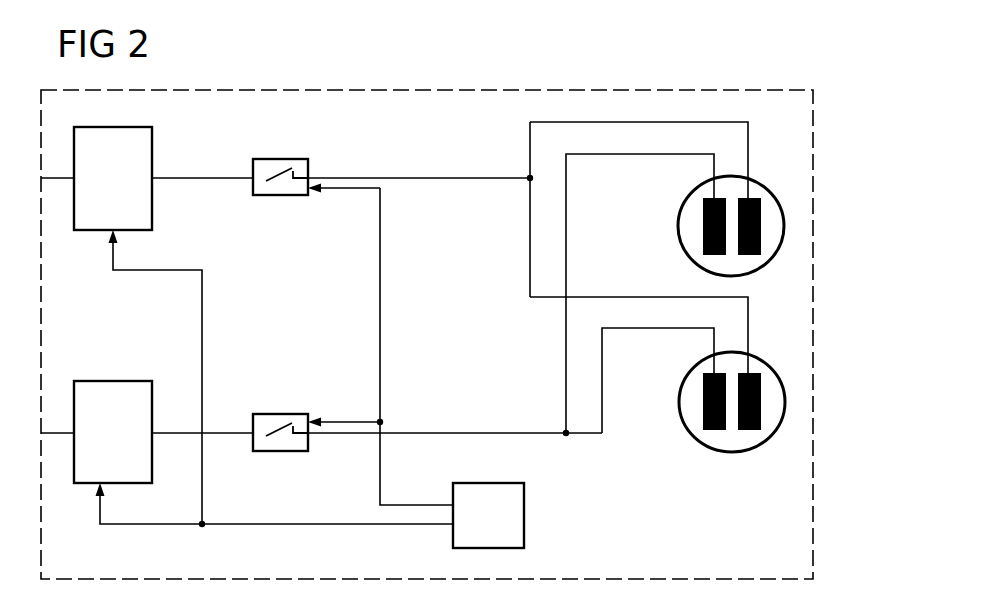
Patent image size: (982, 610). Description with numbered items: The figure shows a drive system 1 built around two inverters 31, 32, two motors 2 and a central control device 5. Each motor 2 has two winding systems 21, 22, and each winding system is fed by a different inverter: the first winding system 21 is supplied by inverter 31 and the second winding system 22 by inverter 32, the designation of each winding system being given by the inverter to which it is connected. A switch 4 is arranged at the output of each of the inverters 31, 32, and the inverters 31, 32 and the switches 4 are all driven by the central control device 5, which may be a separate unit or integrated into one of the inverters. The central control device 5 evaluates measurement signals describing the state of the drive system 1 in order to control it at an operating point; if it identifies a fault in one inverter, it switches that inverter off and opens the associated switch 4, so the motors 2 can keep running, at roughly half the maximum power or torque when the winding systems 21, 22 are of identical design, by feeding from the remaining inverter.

The drive system 1 is at (465, 90).
The motor 2 is at (734, 299).
The first winding system 21 is at (761, 227).
The second winding system 22 is at (703, 208).
The inverter 31 is at (152, 212).
The inverter 32 is at (119, 381).
The switch 4 is at (289, 195).
The central control device 5 is at (524, 510).